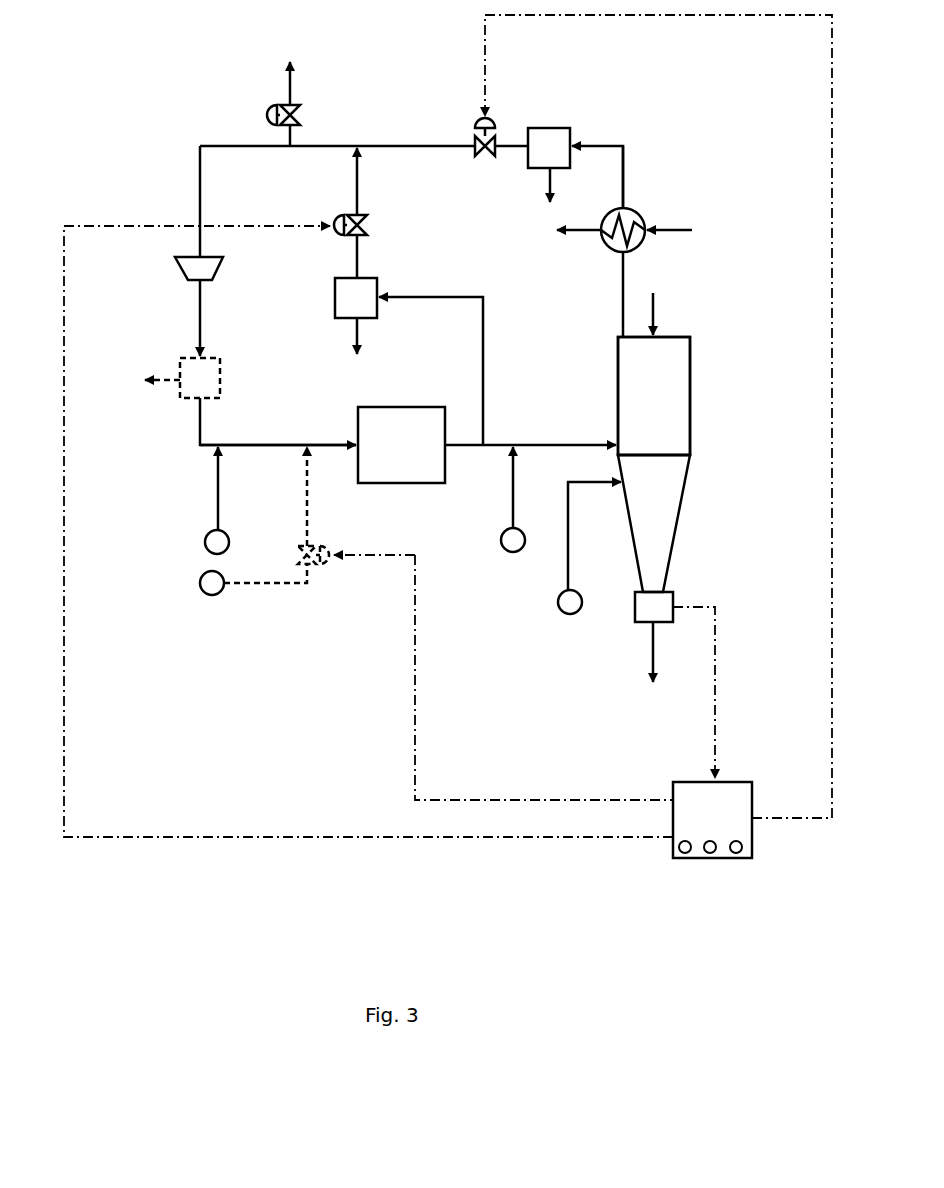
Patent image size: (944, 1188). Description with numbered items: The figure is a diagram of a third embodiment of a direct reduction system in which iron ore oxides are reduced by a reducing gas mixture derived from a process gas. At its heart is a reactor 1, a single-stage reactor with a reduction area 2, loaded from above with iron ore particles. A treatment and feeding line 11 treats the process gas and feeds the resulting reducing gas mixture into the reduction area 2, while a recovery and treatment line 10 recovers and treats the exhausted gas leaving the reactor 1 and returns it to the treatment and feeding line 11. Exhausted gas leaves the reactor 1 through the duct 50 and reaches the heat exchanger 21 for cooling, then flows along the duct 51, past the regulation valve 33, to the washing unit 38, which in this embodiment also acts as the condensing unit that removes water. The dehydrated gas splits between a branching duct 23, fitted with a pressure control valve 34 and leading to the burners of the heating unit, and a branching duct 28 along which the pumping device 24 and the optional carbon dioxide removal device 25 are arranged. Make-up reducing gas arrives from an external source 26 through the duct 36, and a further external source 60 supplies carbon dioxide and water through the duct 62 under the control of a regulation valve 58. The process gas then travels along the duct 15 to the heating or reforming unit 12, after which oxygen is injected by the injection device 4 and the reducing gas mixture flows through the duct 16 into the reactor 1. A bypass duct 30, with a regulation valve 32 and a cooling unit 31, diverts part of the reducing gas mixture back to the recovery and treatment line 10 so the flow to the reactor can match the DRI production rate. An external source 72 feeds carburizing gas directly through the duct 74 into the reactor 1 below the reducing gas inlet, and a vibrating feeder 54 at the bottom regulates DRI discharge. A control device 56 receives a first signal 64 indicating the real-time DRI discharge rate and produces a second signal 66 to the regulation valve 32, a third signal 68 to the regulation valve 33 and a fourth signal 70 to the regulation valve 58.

The reactor 1 is at (692, 418).
The reduction area 2 is at (654, 396).
The injection device 4 is at (512, 526).
The recovery and treatment line 10 is at (332, 144).
The treatment and feeding line 11 is at (196, 420).
The heating unit or reforming unit 12 is at (385, 405).
The duct 15 is at (245, 450).
The duct 16 is at (525, 443).
The heat exchanger 21 is at (648, 212).
The branching duct 23 is at (296, 95).
The pumping device 24 is at (190, 262).
The removal device 25 is at (210, 366).
The external source 26 is at (205, 545).
The branching duct 28 is at (200, 200).
The bypass duct 30 is at (354, 206).
The cooling unit 31 is at (368, 280).
The regulation valve 32 is at (364, 218).
The regulation valve 33 is at (478, 125).
The pressure control valve 34 is at (262, 115).
The duct 36 is at (220, 483).
The washing unit 38 is at (548, 135).
The duct 50 is at (620, 290).
The duct 51 is at (628, 180).
The vibrating feeder 54 is at (677, 598).
The control device 56 is at (752, 835).
The regulation valve 58 is at (326, 542).
The further external source 60 is at (200, 585).
The duct 62 is at (240, 585).
The first signal 64 is at (718, 720).
The second signal 66 is at (560, 843).
The third signal 68 is at (830, 660).
The fourth signal 70 is at (553, 795).
The external source 72 is at (556, 606).
The duct 74 is at (562, 545).